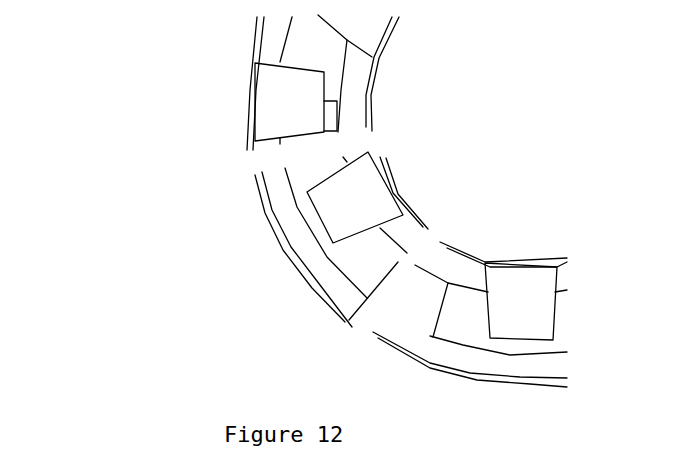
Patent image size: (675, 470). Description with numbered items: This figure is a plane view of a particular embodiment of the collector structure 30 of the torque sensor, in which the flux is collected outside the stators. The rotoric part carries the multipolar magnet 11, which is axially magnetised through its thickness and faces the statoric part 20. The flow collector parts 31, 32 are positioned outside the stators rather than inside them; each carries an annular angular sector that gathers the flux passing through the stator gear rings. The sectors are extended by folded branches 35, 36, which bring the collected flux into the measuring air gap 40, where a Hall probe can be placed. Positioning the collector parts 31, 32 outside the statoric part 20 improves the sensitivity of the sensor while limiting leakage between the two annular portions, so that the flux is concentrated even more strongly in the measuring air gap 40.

The multipolar magnet 11 is at (460, 318).
The statoric part 20 is at (340, 94).
The collector structure 30 is at (210, 127).
The flow collector part 31 is at (263, 172).
The flow collector part 32 is at (398, 168).
The folded branch 35 is at (272, 162).
The folded branch 36 is at (423, 248).
The measuring air gap 40 is at (308, 152).